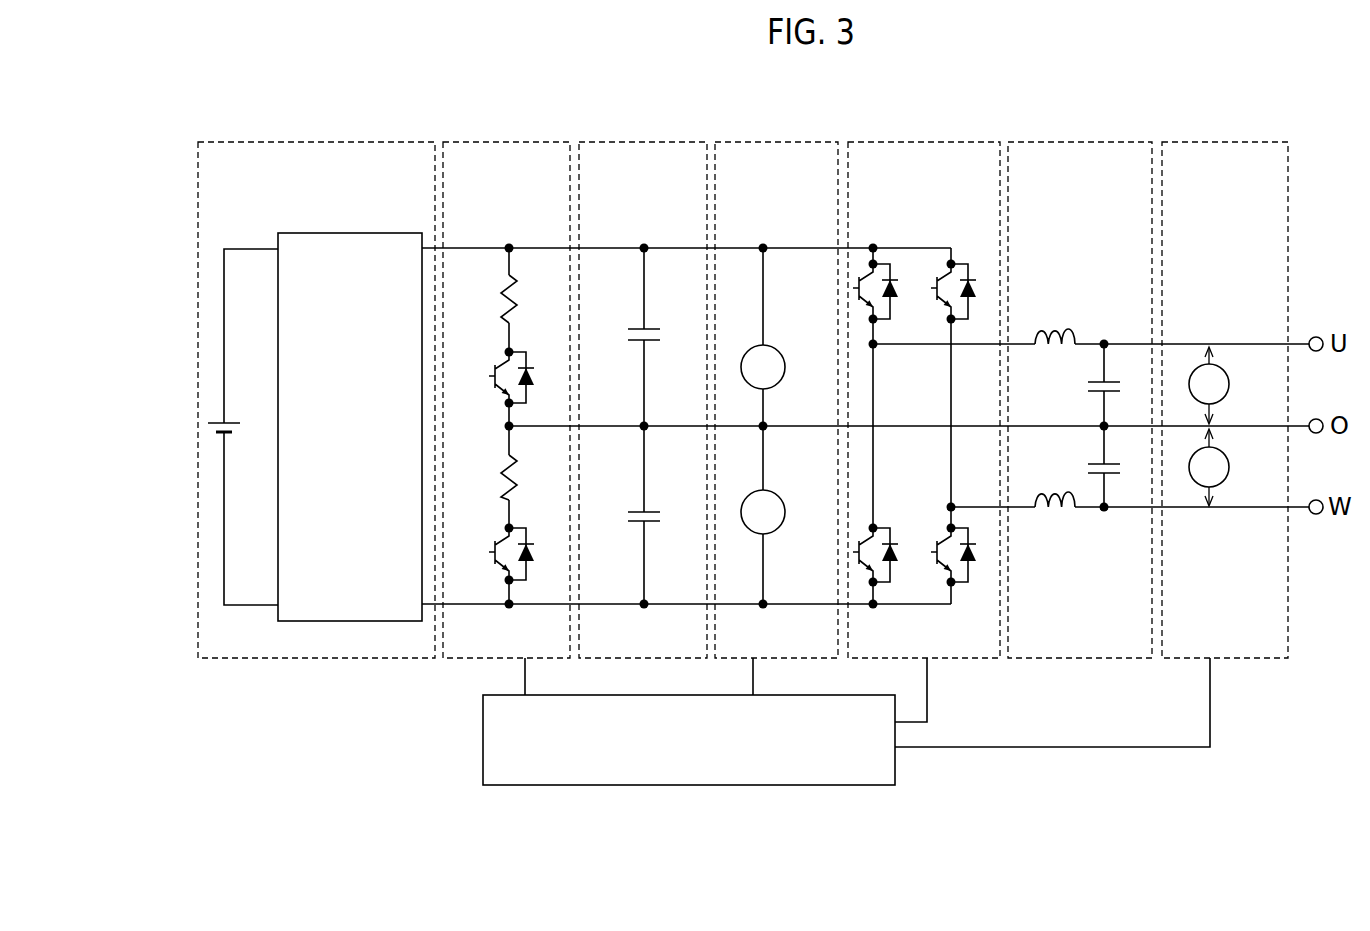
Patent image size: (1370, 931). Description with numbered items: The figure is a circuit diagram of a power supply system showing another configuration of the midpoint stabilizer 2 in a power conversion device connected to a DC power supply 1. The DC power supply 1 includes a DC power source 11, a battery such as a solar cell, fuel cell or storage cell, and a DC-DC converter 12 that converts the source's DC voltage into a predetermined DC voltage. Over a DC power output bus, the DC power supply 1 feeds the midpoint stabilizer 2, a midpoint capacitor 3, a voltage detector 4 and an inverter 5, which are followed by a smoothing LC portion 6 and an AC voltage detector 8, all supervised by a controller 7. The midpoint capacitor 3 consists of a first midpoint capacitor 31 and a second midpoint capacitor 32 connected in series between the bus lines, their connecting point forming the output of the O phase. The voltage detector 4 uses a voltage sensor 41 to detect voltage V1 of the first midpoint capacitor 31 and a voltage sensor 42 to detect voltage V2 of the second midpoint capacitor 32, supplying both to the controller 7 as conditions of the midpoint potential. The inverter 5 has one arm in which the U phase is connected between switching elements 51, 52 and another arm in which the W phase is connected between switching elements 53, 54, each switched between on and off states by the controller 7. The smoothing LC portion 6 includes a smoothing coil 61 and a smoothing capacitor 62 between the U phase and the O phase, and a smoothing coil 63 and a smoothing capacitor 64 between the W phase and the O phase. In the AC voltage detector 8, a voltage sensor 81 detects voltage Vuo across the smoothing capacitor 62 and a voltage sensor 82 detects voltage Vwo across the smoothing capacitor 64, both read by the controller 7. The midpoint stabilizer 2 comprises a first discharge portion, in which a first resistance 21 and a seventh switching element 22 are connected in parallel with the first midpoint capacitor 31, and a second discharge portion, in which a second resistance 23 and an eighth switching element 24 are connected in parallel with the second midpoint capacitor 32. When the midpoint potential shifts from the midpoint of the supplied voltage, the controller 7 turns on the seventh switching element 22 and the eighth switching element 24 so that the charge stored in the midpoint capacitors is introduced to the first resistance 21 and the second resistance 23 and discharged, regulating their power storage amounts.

The DC power supply 1 is at (350, 142).
The midpoint stabilizer 2 is at (515, 142).
The midpoint capacitor 3 is at (650, 142).
The voltage detector 4 is at (755, 142).
The inverter 5 is at (895, 142).
The smoothing LC portion 6 is at (1070, 142).
The controller 7 is at (897, 775).
The AC voltage detector 8 is at (1215, 142).
The DC power source 11 is at (230, 434).
The DC-DC converter 12 is at (278, 352).
The first resistance 21 is at (517, 300).
The seventh switching element 22 is at (492, 372).
The second resistance 23 is at (517, 478).
The eighth switching element 24 is at (492, 550).
The first midpoint capacitor 31 is at (652, 342).
The second midpoint capacitor 32 is at (652, 522).
The voltage sensor 41 is at (786, 354).
The voltage sensor 42 is at (786, 500).
The first switching element 51 is at (887, 307).
The second switching element 52 is at (887, 568).
The third switching element 53 is at (967, 275).
The fourth switching element 54 is at (955, 585).
The smoothing coil 61 is at (1073, 325).
The smoothing capacitor 62 is at (1088, 388).
The smoothing coil 63 is at (1068, 513).
The smoothing capacitor 64 is at (1088, 465).
The voltage sensor 81 is at (1228, 378).
The voltage sensor 82 is at (1230, 462).